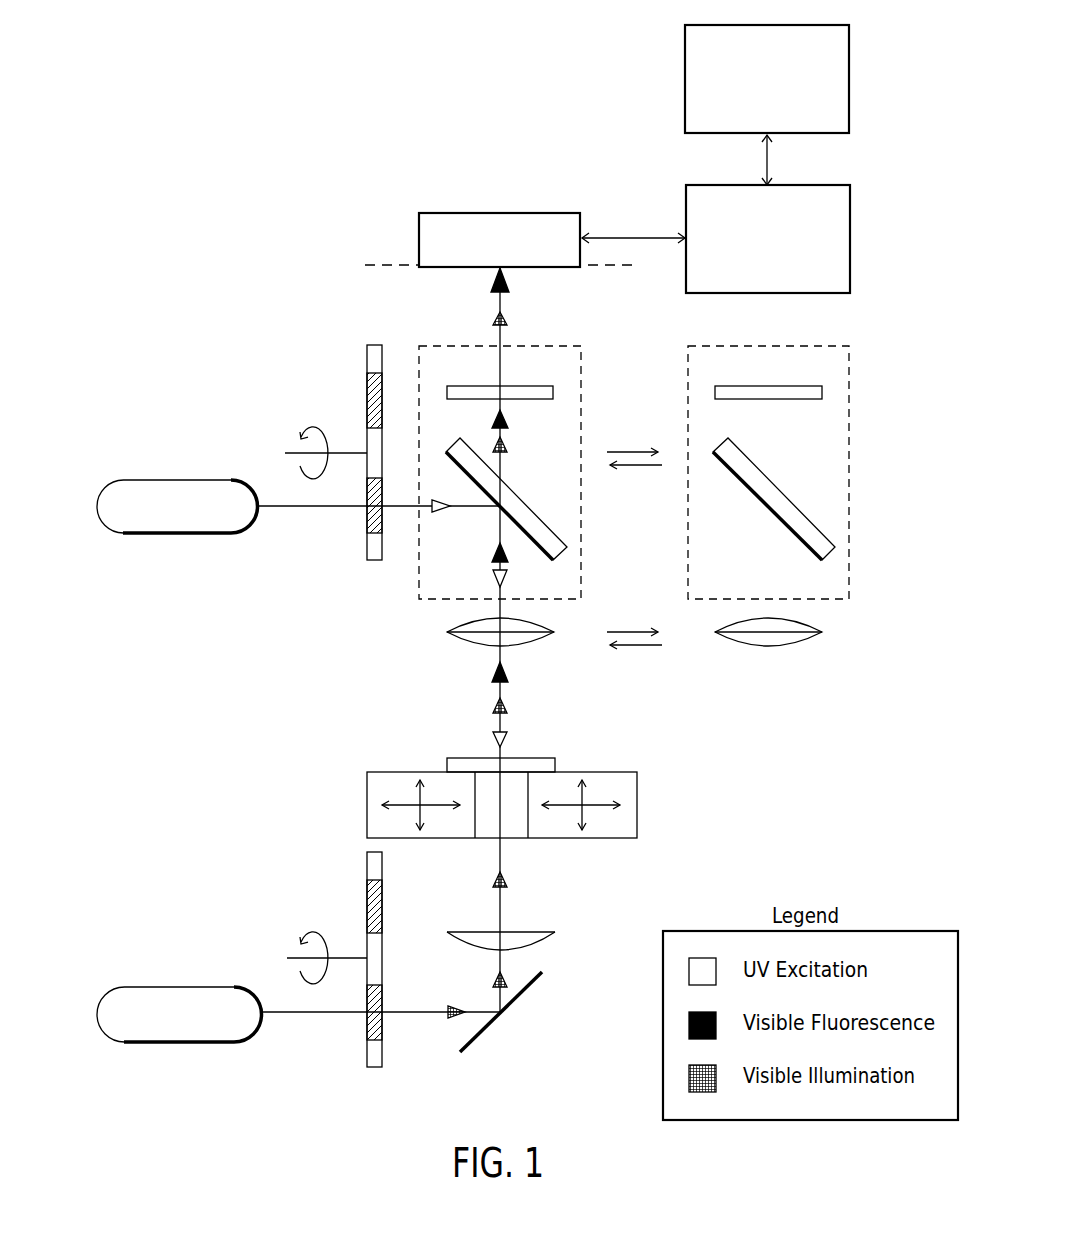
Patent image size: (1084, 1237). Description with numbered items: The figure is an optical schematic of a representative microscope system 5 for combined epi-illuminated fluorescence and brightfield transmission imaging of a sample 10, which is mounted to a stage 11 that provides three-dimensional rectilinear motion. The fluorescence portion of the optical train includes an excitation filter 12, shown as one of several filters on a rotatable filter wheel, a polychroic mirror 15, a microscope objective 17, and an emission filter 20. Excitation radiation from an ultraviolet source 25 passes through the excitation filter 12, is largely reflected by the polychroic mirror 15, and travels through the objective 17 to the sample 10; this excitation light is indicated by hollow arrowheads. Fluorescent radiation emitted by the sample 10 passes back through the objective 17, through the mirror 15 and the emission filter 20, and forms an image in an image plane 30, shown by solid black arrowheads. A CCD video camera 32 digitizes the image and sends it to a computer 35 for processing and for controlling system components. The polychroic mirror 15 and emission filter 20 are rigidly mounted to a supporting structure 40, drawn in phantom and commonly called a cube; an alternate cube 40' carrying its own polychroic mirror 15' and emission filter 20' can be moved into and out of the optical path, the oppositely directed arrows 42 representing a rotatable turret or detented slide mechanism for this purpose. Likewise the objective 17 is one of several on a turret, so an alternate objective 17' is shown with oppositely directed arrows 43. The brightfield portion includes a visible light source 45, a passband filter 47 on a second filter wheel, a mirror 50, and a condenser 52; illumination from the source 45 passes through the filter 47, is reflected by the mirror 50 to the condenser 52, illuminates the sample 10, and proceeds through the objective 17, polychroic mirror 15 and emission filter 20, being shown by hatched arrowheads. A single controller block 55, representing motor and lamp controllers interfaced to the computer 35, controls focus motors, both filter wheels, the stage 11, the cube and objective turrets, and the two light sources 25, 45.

The microscope system 5 is at (243, 1069).
The sample 10 is at (513, 758).
The stage 11 is at (597, 770).
The excitation filter 12 is at (367, 520).
The polychroic mirror 15 is at (506, 499).
The polychroic mirror of alternate cube 15' is at (774, 499).
The microscope objective 17 is at (516, 640).
The alternate microscope objective 17' is at (787, 640).
The emission filter 20 is at (501, 378).
The emission filter of alternate cube 20' is at (772, 378).
The ultraviolet source 25 is at (218, 480).
The image plane 30 is at (416, 264).
The CCD video camera 32 is at (542, 212).
The computer 35 is at (805, 184).
The supporting structure 40 is at (500, 458).
The alternate supporting structure 40' is at (772, 458).
The oppositely directed arrows 42 is at (630, 447).
The oppositely directed arrows 43 is at (633, 618).
The visible light source 45 is at (218, 985).
The passband filter 47 is at (367, 1027).
The mirror 50 is at (528, 990).
The condenser 52 is at (528, 947).
The controller block 55 is at (805, 24).